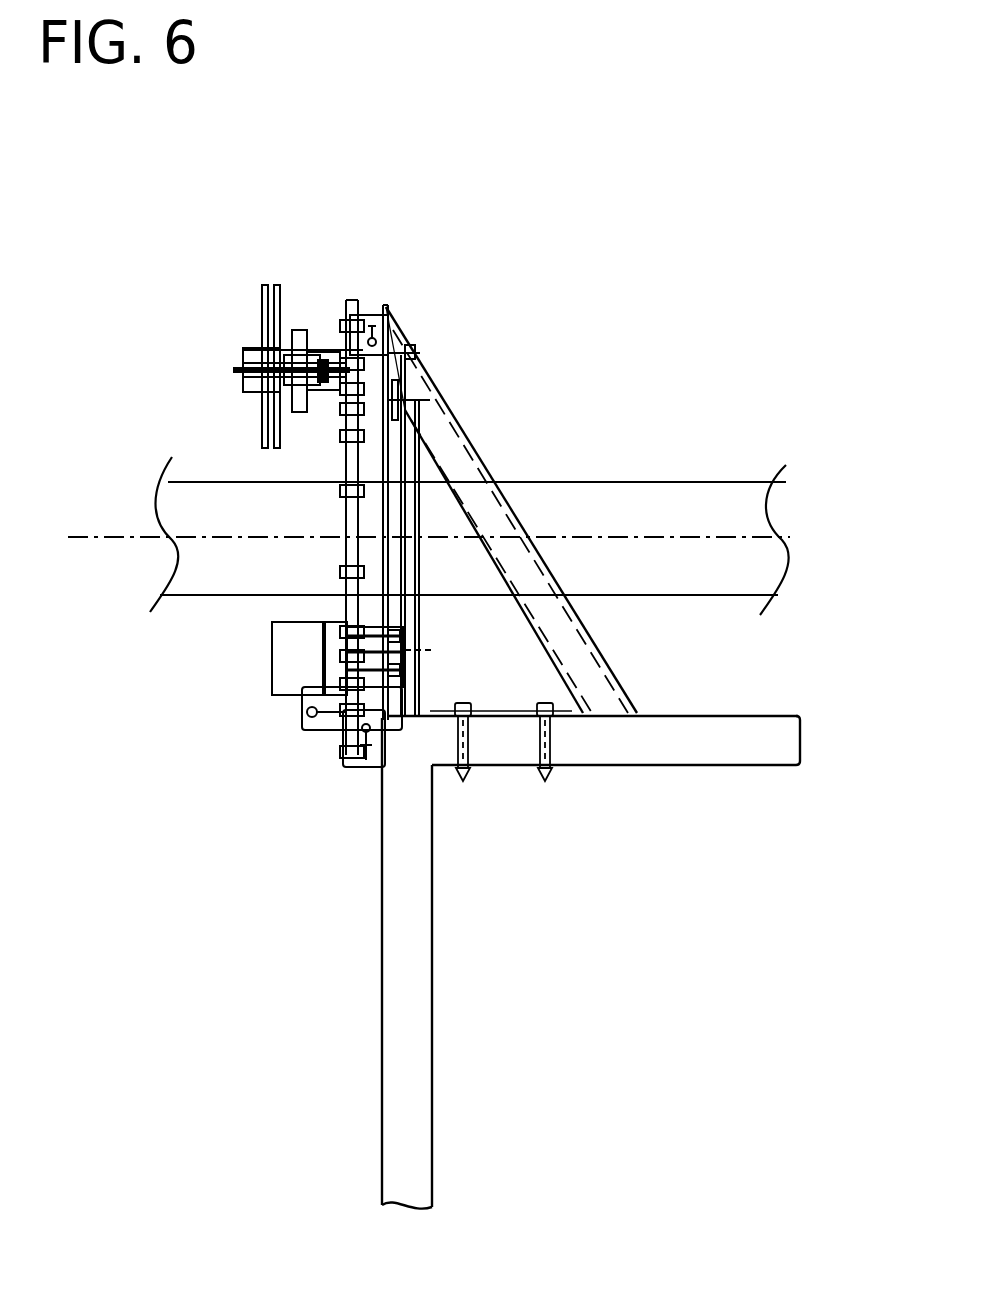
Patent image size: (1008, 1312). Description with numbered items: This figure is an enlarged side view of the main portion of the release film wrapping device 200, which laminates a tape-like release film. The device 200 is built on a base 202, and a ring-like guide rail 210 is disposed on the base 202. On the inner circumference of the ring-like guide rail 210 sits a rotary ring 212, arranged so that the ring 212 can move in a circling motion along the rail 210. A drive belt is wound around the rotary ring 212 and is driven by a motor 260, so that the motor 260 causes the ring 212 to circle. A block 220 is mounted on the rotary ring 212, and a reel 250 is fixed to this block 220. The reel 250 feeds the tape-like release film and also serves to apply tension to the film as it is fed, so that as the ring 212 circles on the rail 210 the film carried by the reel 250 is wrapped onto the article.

The release film wrapping device 200 is at (429, 236).
The base 202 is at (420, 828).
The ring-like guide rail 210 is at (365, 766).
The rotary ring 212 is at (355, 310).
The block 220 is at (322, 338).
The reel 250 is at (262, 330).
The motor 260 is at (288, 668).